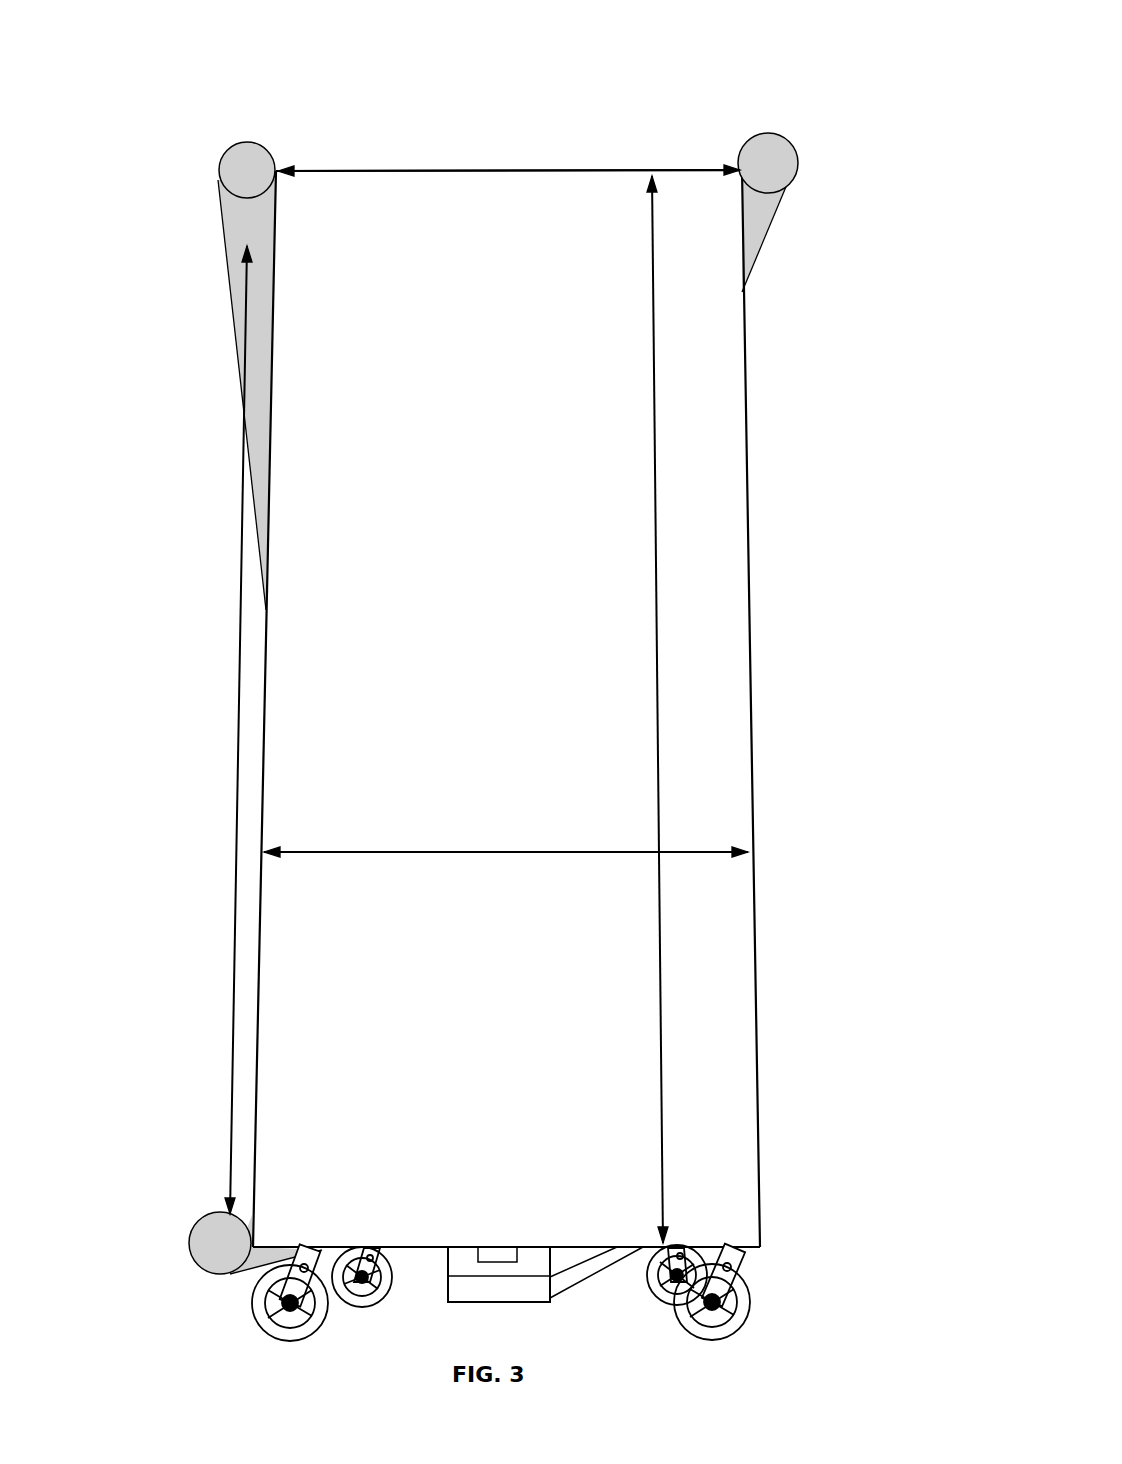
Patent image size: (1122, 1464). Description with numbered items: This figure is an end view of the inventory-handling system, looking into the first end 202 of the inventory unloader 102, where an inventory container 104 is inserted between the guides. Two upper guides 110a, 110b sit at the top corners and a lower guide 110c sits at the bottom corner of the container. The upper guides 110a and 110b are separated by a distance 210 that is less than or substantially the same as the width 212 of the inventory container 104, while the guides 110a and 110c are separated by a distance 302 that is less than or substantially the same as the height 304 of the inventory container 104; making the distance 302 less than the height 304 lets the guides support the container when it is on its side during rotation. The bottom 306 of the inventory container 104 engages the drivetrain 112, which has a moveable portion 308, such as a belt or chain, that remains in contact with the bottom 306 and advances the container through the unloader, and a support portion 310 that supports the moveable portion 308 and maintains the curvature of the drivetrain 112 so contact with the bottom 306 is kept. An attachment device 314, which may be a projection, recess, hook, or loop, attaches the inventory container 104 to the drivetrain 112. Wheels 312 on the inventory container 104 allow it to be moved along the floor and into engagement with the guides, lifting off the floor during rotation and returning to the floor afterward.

The inventory unloader 102 is at (843, 58).
The first end 202 is at (383, 65).
The inventory container 104 is at (748, 673).
The upper guide 110a is at (218, 171).
The upper guide 110b is at (798, 165).
The lower guide 110c is at (189, 1245).
The distance 210 is at (500, 170).
The width 212 is at (448, 852).
The distance 302 is at (240, 668).
The height 304 is at (655, 493).
The bottom 306 is at (420, 1246).
The moveable portion 308 is at (560, 1258).
The support portion 310 is at (445, 1290).
The wheels 312 is at (752, 1322).
The attachment device 314 is at (505, 1247).
The drivetrain 112 is at (532, 1325).